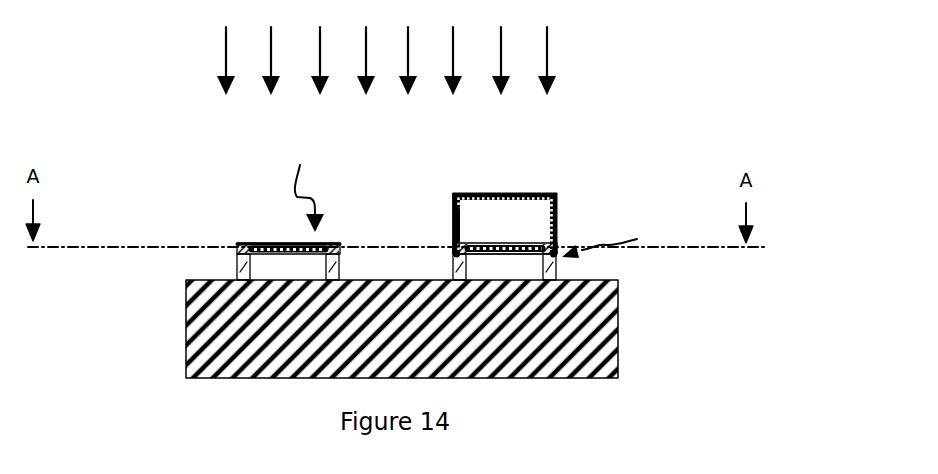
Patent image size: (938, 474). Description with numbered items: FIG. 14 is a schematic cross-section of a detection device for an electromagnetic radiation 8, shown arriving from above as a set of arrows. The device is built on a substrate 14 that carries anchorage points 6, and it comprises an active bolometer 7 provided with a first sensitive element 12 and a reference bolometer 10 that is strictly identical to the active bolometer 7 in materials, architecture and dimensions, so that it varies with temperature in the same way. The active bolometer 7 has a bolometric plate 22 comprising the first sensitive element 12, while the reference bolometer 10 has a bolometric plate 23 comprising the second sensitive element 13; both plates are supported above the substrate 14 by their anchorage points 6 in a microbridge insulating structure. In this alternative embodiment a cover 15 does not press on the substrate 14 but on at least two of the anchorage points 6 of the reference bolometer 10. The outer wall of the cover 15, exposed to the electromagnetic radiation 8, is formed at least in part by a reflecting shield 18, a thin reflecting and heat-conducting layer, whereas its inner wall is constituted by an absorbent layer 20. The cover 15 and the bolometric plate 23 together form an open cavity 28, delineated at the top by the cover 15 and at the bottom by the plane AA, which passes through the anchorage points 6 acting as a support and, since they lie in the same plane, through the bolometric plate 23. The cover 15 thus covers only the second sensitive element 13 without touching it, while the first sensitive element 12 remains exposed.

The anchorage points 6 is at (238, 268).
The active bolometer 7 is at (309, 186).
The electromagnetic radiation 8 is at (547, 60).
The reference bolometer 10 is at (617, 234).
The first sensitive element 12 is at (276, 243).
The second sensitive element 13 is at (490, 244).
The substrate 14 is at (590, 299).
The cover 15 is at (510, 202).
The reflecting shield 18 is at (462, 194).
The absorbent layer 20 is at (453, 228).
The bolometric plate 22 is at (240, 243).
The bolometric plate 23 is at (453, 256).
The open cavity 28 is at (527, 218).